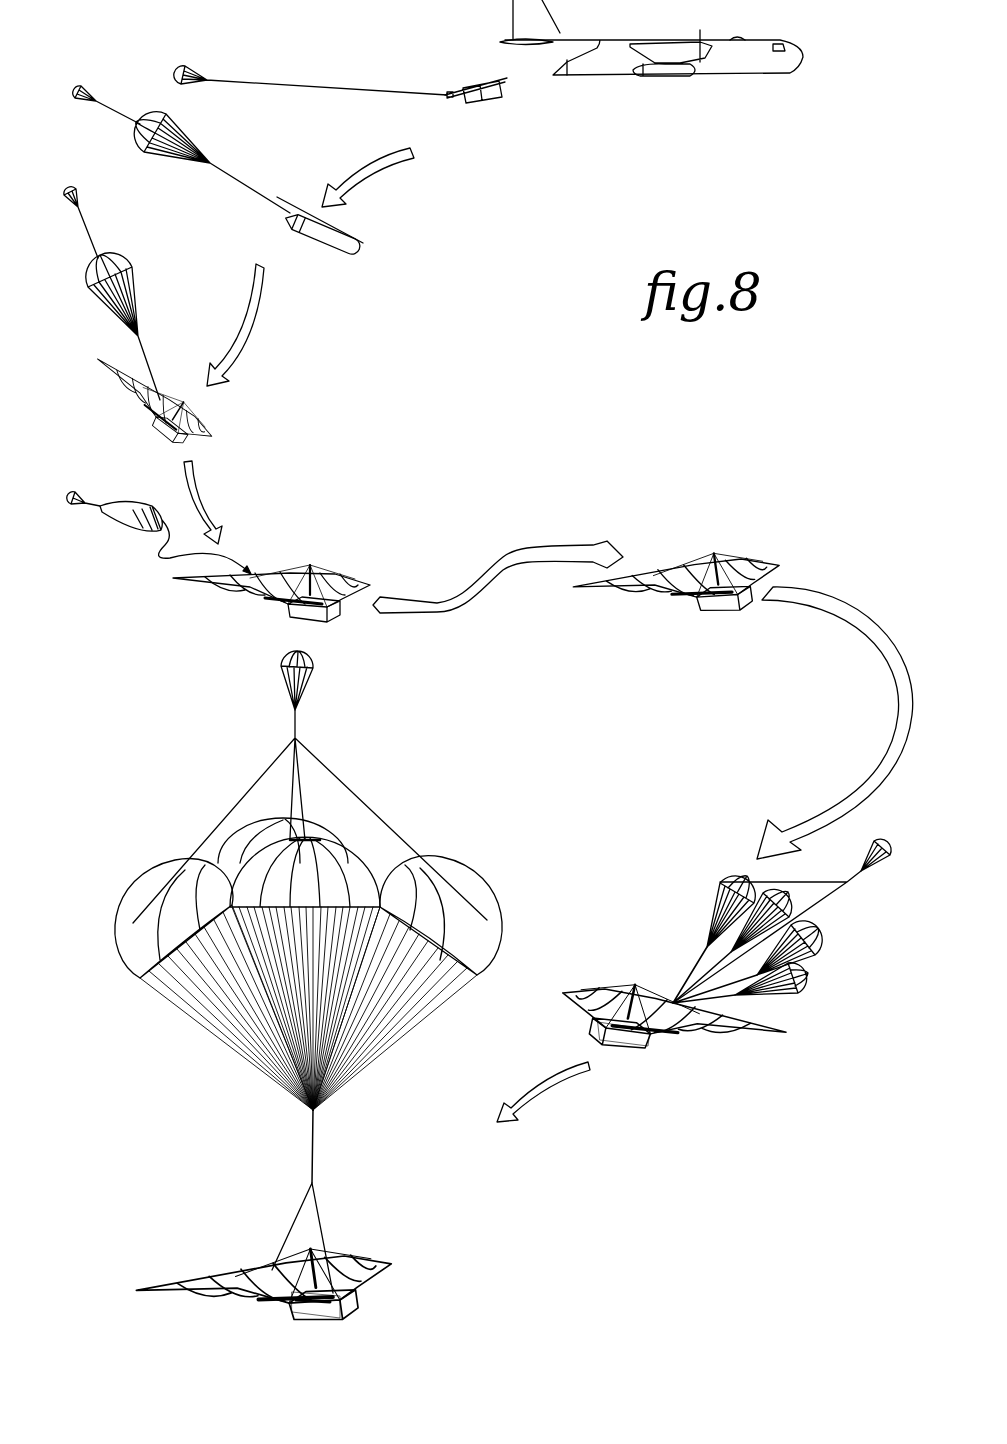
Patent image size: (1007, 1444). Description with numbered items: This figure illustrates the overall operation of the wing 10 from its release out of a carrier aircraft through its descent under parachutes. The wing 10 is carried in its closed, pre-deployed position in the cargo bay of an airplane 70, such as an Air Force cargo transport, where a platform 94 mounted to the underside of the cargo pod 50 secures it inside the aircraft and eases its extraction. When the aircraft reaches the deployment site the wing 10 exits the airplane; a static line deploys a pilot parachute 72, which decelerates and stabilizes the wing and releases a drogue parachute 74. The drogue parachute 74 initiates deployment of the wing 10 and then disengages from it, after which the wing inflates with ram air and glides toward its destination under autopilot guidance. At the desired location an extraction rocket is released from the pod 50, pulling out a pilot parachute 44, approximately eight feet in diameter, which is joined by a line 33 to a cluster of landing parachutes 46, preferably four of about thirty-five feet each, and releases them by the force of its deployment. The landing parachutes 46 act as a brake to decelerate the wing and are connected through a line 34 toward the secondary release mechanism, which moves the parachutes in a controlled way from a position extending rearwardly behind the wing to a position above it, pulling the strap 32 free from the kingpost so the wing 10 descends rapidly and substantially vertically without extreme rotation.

The wing 10 is at (470, 80).
The strap 32 is at (310, 1200).
The line 33 is at (297, 722).
The line 34 is at (316, 1124).
The pilot parachute 44 is at (283, 657).
The landing parachutes 46 is at (228, 862).
The cargo pod 50 is at (478, 100).
The airplane 70 is at (720, 75).
The pilot parachute 72 is at (76, 87).
The drogue parachute 74 is at (140, 128).
The platform 94 is at (315, 1306).